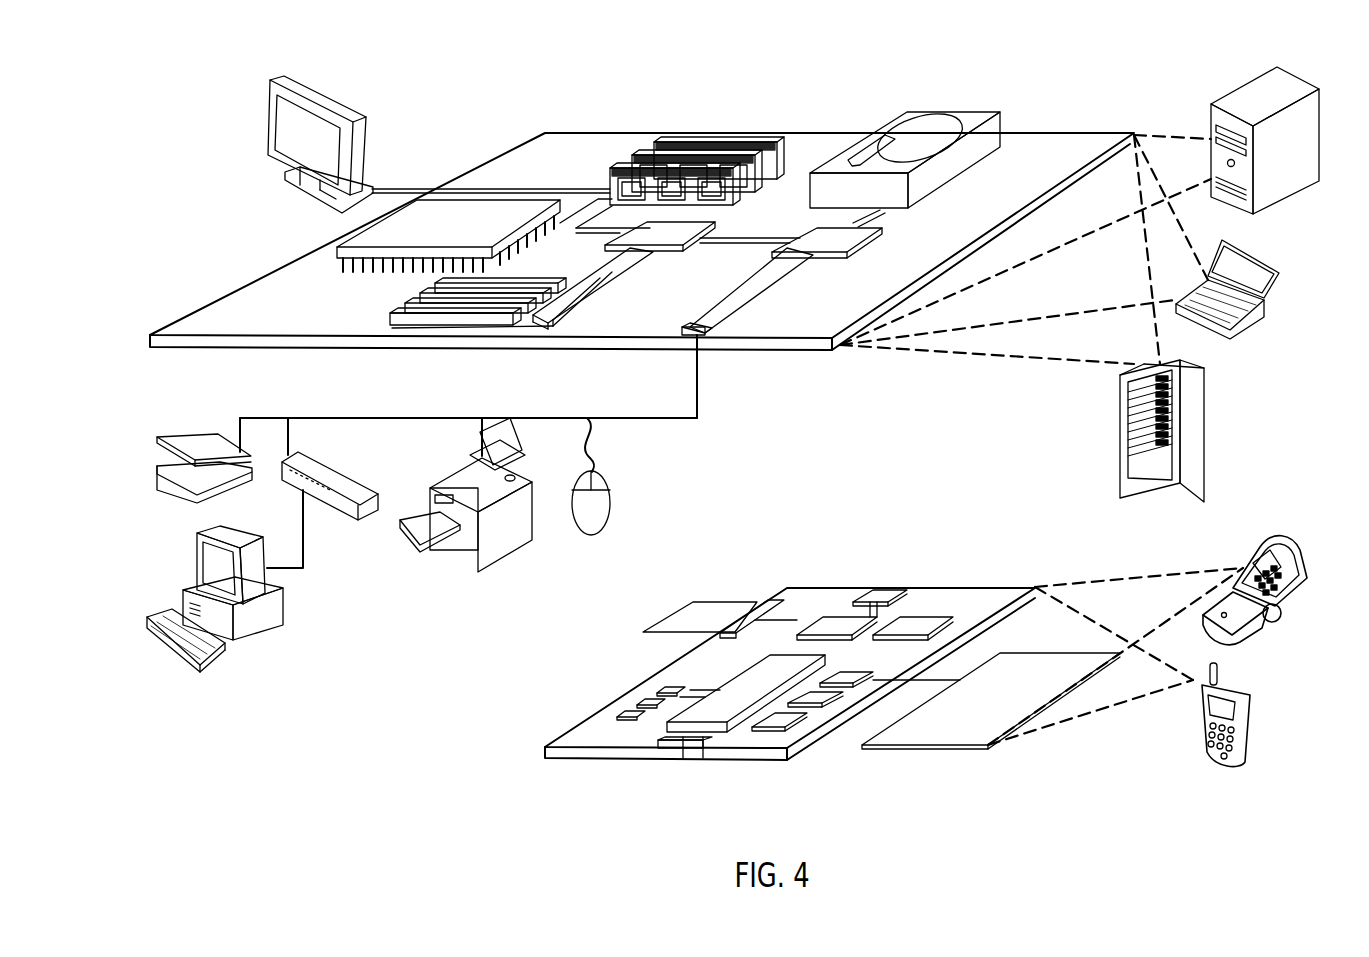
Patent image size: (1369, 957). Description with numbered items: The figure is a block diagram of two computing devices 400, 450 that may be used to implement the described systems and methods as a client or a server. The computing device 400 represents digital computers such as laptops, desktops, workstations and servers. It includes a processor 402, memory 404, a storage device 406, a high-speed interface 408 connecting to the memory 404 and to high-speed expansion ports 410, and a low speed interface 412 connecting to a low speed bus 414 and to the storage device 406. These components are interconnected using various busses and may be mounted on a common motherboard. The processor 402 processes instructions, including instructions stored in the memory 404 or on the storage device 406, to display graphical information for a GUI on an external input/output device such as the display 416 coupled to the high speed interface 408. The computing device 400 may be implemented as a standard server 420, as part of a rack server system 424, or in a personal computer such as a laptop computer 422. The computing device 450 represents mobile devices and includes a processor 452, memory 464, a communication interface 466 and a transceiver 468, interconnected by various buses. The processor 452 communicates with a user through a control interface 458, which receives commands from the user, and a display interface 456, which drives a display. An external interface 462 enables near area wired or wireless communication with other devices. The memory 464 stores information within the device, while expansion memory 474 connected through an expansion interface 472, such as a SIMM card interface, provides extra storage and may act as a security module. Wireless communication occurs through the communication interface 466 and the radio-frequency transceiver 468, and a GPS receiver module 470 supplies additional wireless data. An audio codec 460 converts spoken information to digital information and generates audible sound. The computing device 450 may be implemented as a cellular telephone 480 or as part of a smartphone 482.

The computing device 400 is at (465, 108).
The processor 402 is at (337, 250).
The memory 404 is at (668, 135).
The storage device 406 is at (897, 116).
The high-speed interface 408 is at (637, 233).
The high-speed expansion ports 410 is at (417, 307).
The low speed interface 412 is at (808, 237).
The low speed bus 414 is at (707, 337).
The display 416 is at (270, 80).
The standard server 420 is at (1211, 119).
The laptop computer 422 is at (1277, 271).
The rack server system 424 is at (1120, 459).
The computing device 450 is at (518, 759).
The processor 452 is at (720, 713).
The display interface 456 is at (787, 720).
The control interface 458 is at (817, 702).
The audio codec 460 is at (842, 683).
The external interface 462 is at (683, 748).
The memory 464 is at (637, 705).
The communication interface 466 is at (837, 625).
The transceiver 468 is at (912, 625).
The GPS receiver module 470 is at (888, 595).
The expansion interface 472 is at (787, 601).
The expansion memory 474 is at (740, 601).
The cellular telephone 480 is at (1260, 545).
The smartphone 482 is at (1200, 720).